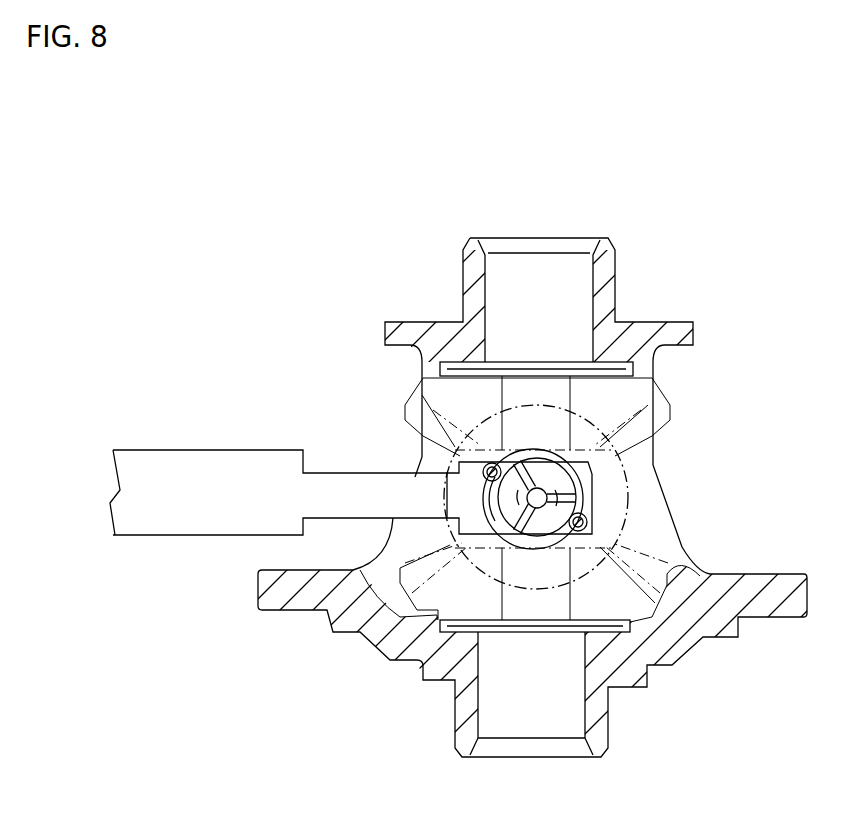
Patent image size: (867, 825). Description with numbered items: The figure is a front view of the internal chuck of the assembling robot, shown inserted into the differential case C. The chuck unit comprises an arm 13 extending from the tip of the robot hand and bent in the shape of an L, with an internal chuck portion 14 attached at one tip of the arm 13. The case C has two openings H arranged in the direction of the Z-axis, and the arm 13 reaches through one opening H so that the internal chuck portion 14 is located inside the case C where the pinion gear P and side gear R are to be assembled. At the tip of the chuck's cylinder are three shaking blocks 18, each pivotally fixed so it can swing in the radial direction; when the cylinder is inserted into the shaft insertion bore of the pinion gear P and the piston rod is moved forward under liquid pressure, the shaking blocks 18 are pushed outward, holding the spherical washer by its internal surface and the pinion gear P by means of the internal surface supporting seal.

The arm 13 is at (360, 490).
The internal chuck portion 14 is at (496, 536).
The shaking blocks 18 is at (578, 505).
The differential case C is at (607, 290).
The openings H is at (410, 447).
The pinion gear P is at (600, 447).
The side gear R is at (715, 573).